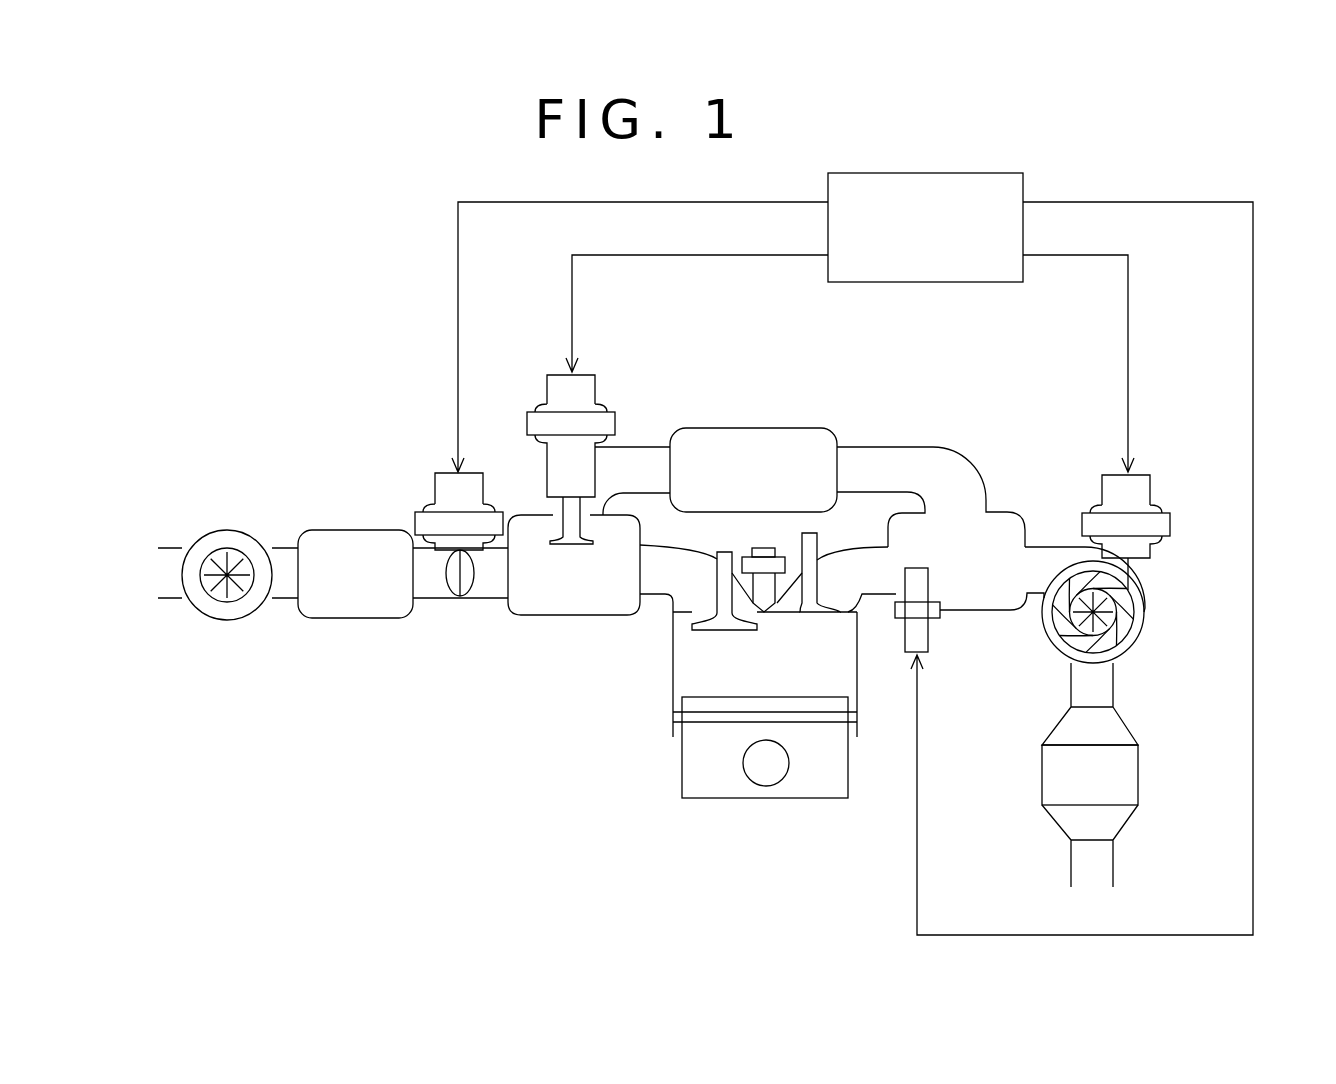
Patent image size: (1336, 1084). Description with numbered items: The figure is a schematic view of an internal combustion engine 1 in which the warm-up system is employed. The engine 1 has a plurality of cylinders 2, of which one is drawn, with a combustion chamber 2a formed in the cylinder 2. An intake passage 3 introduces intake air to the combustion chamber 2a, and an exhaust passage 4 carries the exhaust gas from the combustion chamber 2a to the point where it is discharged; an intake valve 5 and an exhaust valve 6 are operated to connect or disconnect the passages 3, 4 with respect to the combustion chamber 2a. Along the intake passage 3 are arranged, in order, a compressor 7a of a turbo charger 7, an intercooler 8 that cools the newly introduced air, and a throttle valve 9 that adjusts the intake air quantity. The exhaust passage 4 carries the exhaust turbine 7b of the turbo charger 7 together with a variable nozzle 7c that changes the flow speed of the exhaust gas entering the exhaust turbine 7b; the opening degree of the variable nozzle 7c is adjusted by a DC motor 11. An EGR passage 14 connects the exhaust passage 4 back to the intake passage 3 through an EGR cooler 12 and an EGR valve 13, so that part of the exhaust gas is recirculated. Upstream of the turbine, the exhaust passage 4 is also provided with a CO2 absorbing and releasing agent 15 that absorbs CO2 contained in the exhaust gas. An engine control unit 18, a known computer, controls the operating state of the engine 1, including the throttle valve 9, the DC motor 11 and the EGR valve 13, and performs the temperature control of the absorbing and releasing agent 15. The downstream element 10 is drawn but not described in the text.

The internal combustion engine 1 is at (558, 776).
The cylinder 2 is at (673, 672).
The combustion chamber 2a is at (752, 676).
The intake passage 3 is at (497, 600).
The exhaust passage 4 is at (1040, 547).
The intake valve 5 is at (700, 632).
The exhaust valve 6 is at (803, 613).
The turbo charger 7 is at (194, 495).
The compressor 7a is at (235, 530).
The exhaust turbine 7b is at (1147, 612).
The variable nozzle 7c is at (1063, 637).
The intercooler 8 is at (356, 618).
The throttle valve 9 is at (450, 592).
The catalytic converter 10 is at (1042, 786).
The DC motor 11 is at (1150, 480).
The EGR cooler 12 is at (745, 428).
The EGR valve 13 is at (597, 380).
The EGR passage 14 is at (857, 447).
The CO2 absorbing and releasing agent 15 is at (930, 634).
The engine control unit (ECU) 18 is at (937, 173).